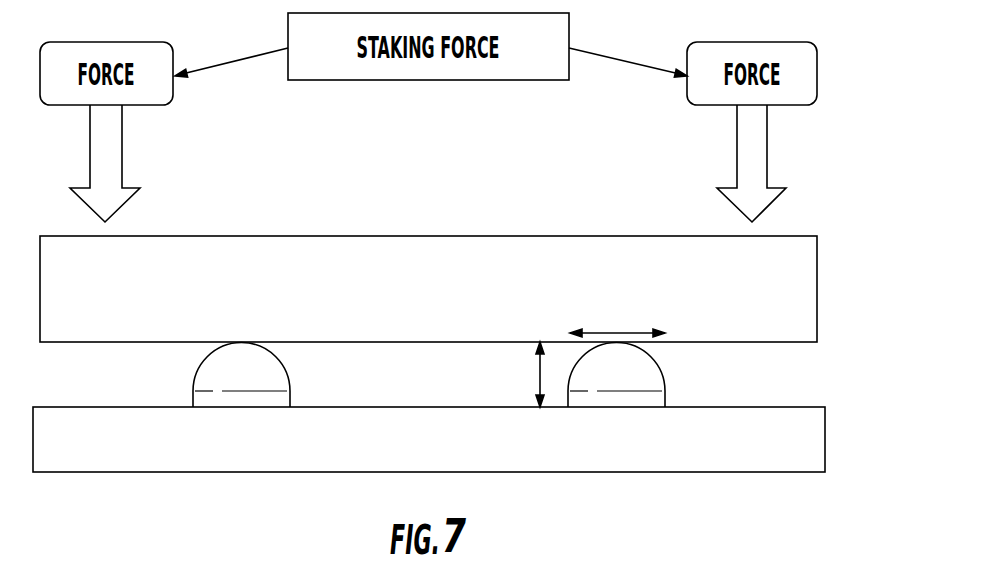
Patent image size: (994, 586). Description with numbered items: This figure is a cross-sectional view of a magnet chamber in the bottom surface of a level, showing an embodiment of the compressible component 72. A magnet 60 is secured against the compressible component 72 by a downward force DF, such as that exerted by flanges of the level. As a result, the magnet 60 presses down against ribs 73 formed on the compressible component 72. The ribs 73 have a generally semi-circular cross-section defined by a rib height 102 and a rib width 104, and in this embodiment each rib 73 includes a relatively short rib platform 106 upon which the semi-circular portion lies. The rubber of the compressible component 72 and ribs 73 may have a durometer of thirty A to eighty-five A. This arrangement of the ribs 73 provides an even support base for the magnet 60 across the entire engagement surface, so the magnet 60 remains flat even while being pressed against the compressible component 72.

The downward force DF is at (764, 164).
The magnet 60 is at (788, 288).
The compressible component 72 is at (740, 447).
The ribs 73 is at (193, 382).
The rib height 102 is at (538, 372).
The rib width 104 is at (615, 330).
The rib platform 106 is at (605, 402).